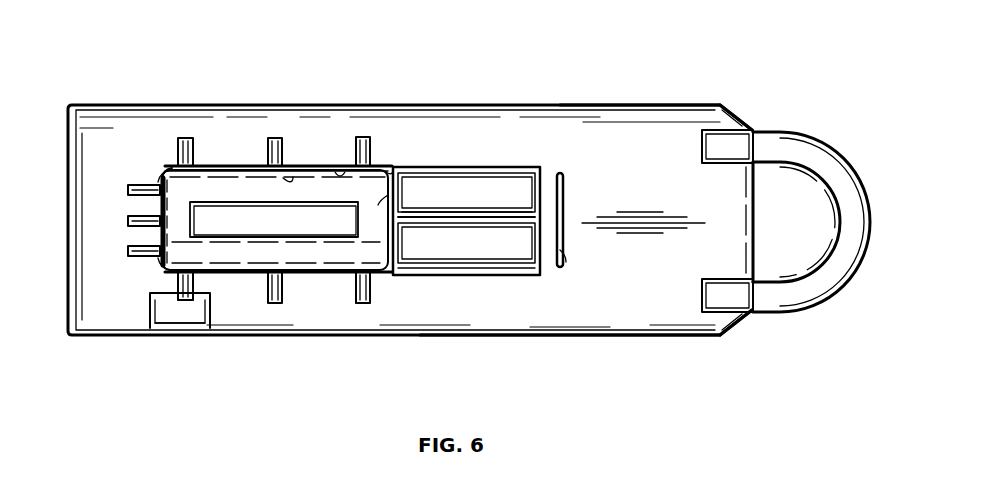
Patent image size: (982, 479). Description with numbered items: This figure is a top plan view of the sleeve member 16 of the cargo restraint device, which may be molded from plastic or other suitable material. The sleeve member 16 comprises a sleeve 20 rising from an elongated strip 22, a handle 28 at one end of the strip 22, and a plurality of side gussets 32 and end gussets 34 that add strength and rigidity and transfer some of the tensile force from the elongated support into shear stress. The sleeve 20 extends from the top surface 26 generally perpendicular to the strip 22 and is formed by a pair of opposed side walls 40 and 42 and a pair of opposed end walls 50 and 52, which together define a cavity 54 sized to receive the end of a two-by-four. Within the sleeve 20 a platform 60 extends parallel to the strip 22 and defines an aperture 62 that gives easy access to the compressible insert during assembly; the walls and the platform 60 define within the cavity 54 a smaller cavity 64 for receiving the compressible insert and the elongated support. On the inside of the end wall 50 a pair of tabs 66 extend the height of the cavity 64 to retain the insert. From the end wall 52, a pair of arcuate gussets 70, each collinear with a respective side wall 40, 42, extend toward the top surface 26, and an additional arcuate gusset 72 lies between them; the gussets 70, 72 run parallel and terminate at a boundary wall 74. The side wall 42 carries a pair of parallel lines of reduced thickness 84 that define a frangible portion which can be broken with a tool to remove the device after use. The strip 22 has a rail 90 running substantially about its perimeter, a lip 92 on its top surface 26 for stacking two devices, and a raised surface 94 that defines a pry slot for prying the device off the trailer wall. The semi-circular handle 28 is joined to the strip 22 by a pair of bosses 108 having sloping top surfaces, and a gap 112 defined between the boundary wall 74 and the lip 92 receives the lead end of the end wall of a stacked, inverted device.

The sleeve member 16 is at (498, 96).
The sleeve 20 is at (307, 163).
The elongated strip 22 is at (607, 102).
The top surface 26 is at (633, 188).
The handle 28 is at (817, 135).
The side gussets 32 is at (267, 147).
The end gussets 34 is at (127, 249).
The side wall 40 is at (170, 163).
The side wall 42 is at (390, 275).
The end wall 50 is at (160, 258).
The end wall 52 is at (390, 173).
The cavity 54 is at (340, 177).
The platform 60 is at (167, 178).
The aperture 62 is at (200, 230).
The cavity 64 is at (293, 177).
The tabs 66 is at (163, 188).
The arcuate gussets 70 is at (478, 167).
The additional arcuate gusset 72 is at (483, 217).
The boundary wall 74 is at (542, 178).
The lines of reduced thickness 84 is at (173, 275).
The rail 90 is at (690, 102).
The lip 92 is at (627, 273).
The raised surface 94 is at (195, 317).
The bosses 108 is at (730, 145).
The gap 112 is at (547, 263).